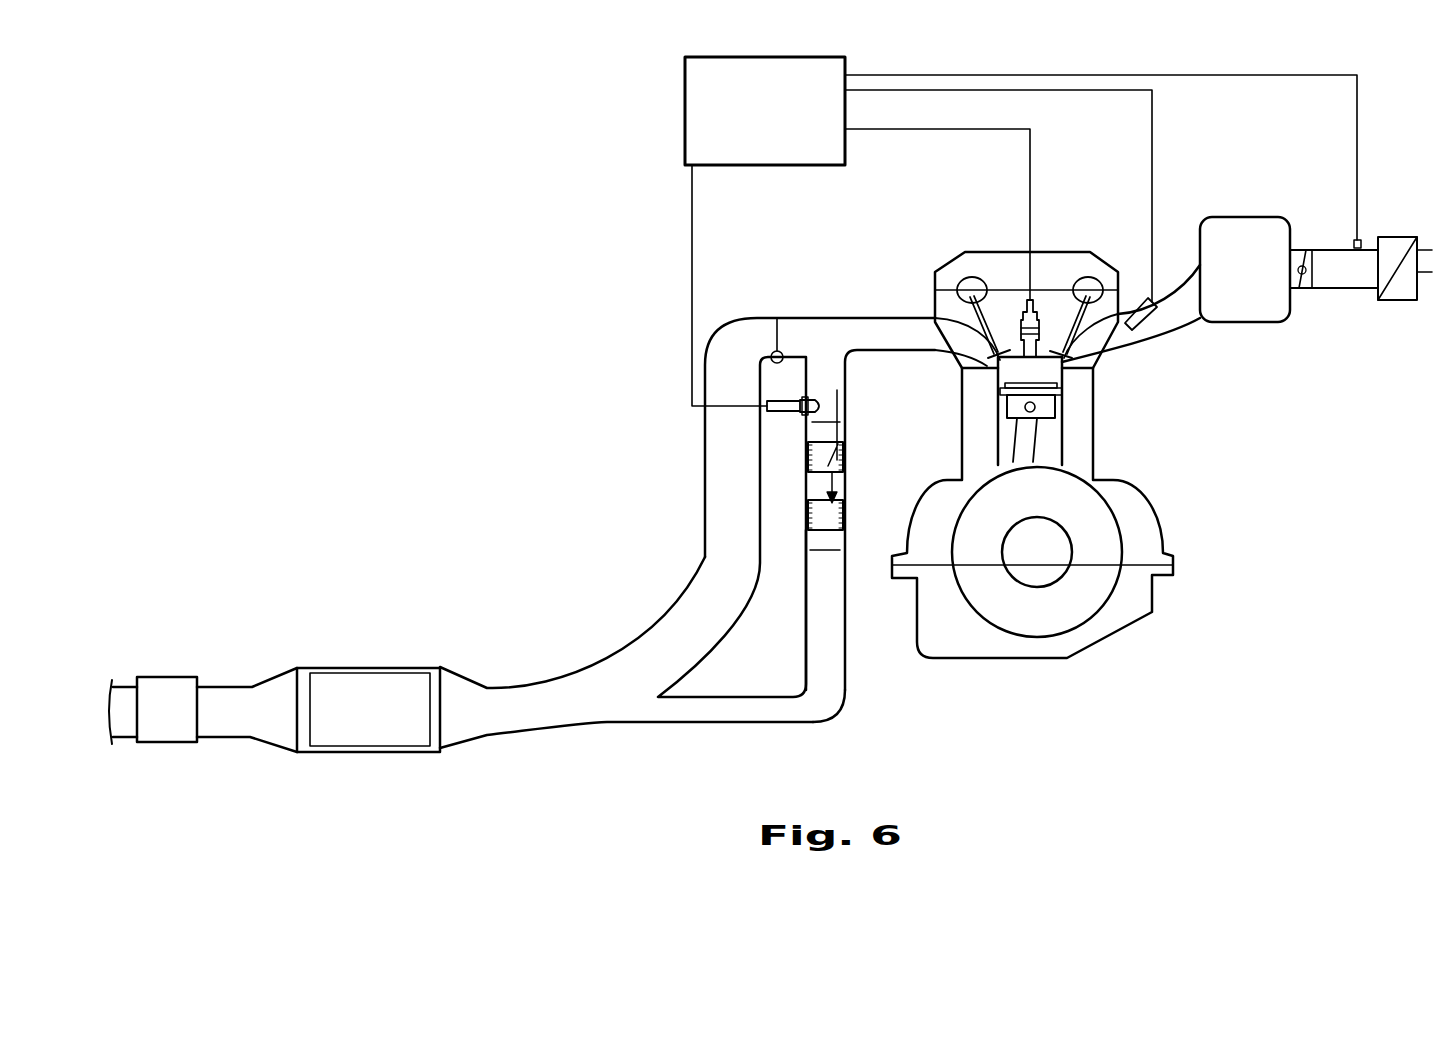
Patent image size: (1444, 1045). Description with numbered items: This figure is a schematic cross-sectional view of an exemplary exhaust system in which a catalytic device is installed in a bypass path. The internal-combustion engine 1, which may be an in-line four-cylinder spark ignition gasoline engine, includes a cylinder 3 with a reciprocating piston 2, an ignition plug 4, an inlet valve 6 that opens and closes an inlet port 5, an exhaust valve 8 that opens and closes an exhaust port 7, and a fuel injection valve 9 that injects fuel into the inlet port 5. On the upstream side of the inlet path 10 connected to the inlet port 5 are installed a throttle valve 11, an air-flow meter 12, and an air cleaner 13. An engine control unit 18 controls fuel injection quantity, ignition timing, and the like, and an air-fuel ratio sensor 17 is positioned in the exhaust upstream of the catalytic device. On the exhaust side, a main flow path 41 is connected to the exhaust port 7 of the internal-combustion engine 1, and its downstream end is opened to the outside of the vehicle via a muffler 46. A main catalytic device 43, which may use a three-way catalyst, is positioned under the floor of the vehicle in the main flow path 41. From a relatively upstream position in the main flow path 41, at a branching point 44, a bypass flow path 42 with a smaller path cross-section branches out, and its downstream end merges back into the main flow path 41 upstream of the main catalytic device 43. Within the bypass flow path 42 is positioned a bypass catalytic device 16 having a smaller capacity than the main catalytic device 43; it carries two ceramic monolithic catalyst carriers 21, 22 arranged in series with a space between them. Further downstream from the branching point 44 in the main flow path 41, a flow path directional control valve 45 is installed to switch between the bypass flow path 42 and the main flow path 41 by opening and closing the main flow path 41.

The internal-combustion engine 1 is at (1192, 528).
The piston 2 is at (1050, 403).
The cylinder 3 is at (1062, 430).
The ignition plug 4 is at (1018, 308).
The inlet port 5 is at (1098, 346).
The inlet valve 6 is at (1064, 308).
The exhaust port 7 is at (965, 343).
The exhaust valve 8 is at (958, 310).
The fuel injection valve 9 is at (1136, 303).
The inlet path 10 is at (1183, 307).
The throttle valve 11 is at (1300, 289).
The air-flow meter 12 is at (1354, 243).
The air cleaner 13 is at (1392, 237).
The bypass catalytic device 16 is at (858, 448).
The air-fuel ratio sensor 17 is at (770, 398).
The engine control unit 18 is at (763, 57).
The catalyst carrier 21 is at (818, 466).
The catalyst carrier 22 is at (818, 519).
The main flow path 41 is at (717, 508).
The bypass flow path 42 is at (838, 605).
The main catalytic device 43 is at (354, 682).
The branching point 44 is at (836, 325).
The flow path directional control valve 45 is at (775, 348).
The muffler 46 is at (162, 676).